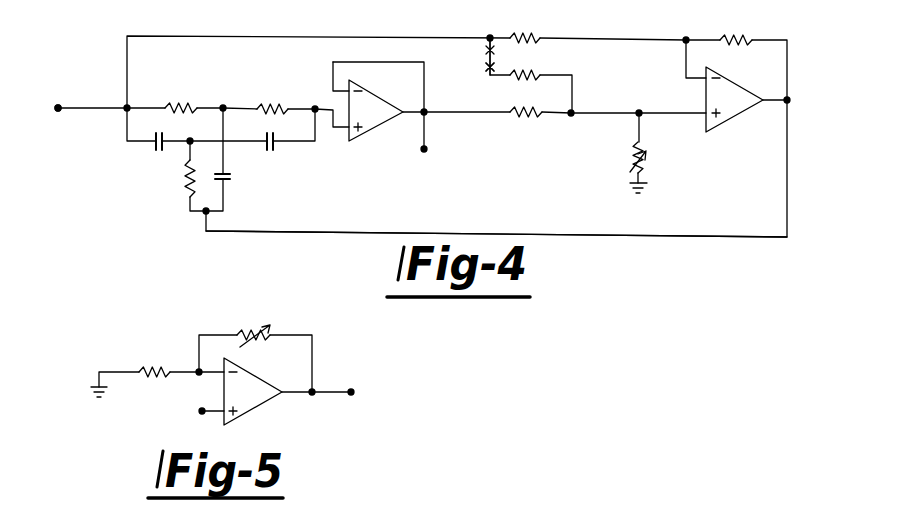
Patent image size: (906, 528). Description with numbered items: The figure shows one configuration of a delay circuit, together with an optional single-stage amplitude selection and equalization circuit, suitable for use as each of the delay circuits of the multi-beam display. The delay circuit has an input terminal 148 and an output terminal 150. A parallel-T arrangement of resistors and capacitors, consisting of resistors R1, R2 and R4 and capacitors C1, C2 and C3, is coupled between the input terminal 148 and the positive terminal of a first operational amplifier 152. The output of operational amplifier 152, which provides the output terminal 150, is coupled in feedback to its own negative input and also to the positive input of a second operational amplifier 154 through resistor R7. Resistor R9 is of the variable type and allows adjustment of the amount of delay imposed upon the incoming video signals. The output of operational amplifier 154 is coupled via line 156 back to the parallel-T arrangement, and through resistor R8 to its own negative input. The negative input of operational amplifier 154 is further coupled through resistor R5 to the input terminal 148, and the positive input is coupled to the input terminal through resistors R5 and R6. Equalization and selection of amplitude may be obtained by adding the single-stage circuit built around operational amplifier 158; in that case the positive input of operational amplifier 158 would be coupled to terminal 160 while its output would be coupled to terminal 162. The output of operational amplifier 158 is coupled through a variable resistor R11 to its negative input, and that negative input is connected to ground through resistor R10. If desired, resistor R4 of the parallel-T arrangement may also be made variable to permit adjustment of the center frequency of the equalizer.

In FIG. 4, the input terminal 148 is at (59, 103).
In FIG. 4, the resistor R1 is at (181, 94).
In FIG. 4, the resistor R2 is at (277, 94).
In FIG. 4, the capacitor C1 is at (152, 152).
In FIG. 4, the capacitor C2 is at (273, 155).
In FIG. 4, the capacitor C3 is at (231, 185).
In FIG. 4, the resistor R4 is at (174, 179).
In FIG. 4, the operational amplifier 152 is at (375, 123).
In FIG. 4, the output terminal 150 is at (424, 149).
In FIG. 4, the line 156 is at (449, 232).
In FIG. 4, the resistor R5 is at (528, 25).
In FIG. 4, the resistor R6 is at (526, 89).
In FIG. 4, the resistor R7 is at (526, 126).
In FIG. 4, the terminal 160 is at (494, 50).
In FIG. 4, the terminal 162 is at (486, 70).
In FIG. 4, the resistor R8 is at (741, 25).
In FIG. 4, the variable resistor R9 is at (661, 153).
In FIG. 4, the operational amplifier 154 is at (728, 110).
In FIG. 5, the resistor R10 is at (159, 359).
In FIG. 5, the variable resistor R11 is at (258, 324).
In FIG. 5, the operational amplifier 158 is at (261, 398).